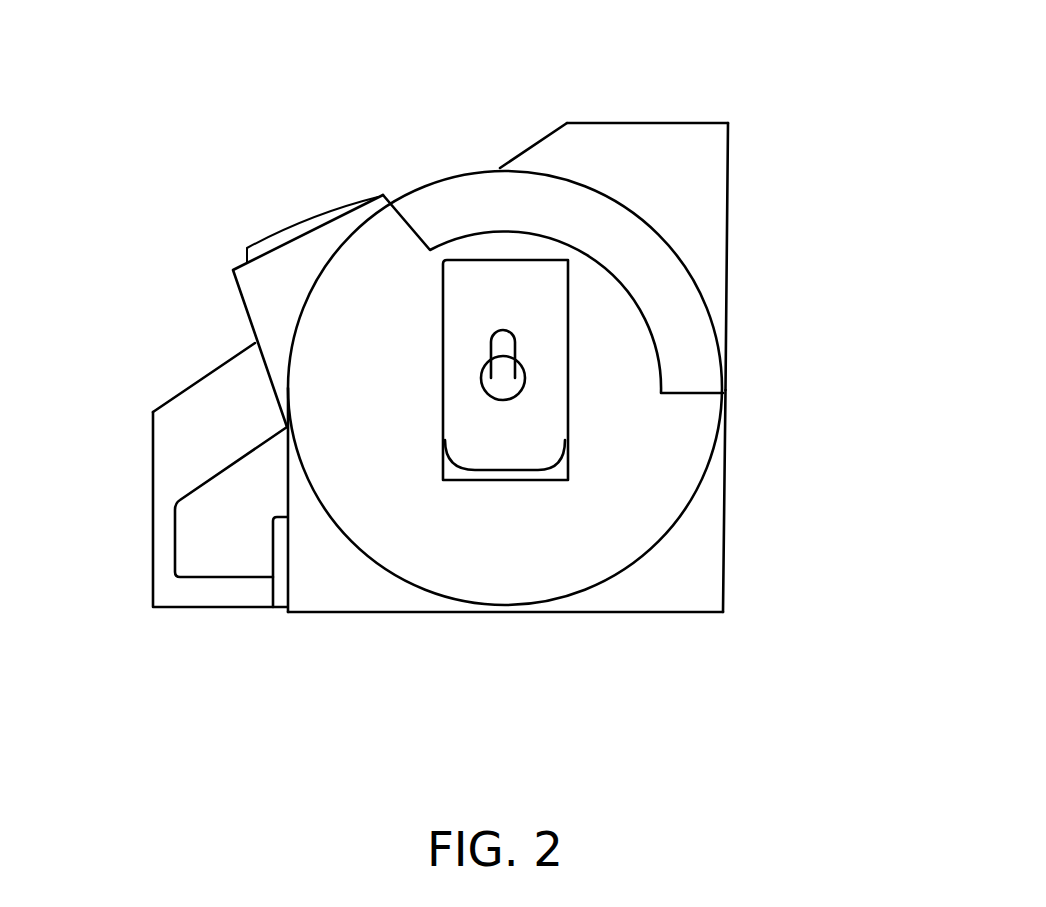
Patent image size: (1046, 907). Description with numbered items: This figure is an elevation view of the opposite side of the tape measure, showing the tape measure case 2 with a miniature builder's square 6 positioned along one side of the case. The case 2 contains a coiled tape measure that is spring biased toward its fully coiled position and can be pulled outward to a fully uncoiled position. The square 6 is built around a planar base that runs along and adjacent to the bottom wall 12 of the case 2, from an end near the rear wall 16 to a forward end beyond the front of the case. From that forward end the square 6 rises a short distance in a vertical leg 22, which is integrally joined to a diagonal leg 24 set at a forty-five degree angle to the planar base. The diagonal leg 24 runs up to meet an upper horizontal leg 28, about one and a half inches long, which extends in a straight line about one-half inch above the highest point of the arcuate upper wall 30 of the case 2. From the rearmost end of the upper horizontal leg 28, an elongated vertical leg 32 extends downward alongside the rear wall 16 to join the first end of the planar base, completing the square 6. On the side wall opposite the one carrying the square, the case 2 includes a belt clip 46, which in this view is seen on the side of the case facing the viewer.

The tape measure case 2 is at (520, 570).
The miniature builder's square 6 is at (728, 202).
The bottom wall 12 is at (345, 613).
The rear wall 16 is at (723, 508).
The vertical leg 22 is at (153, 497).
The diagonal leg 24 is at (202, 370).
The upper horizontal leg 28 is at (650, 122).
The arcuate upper wall 30 is at (478, 170).
The elongated vertical leg 32 is at (728, 287).
The belt clip 46 is at (443, 418).